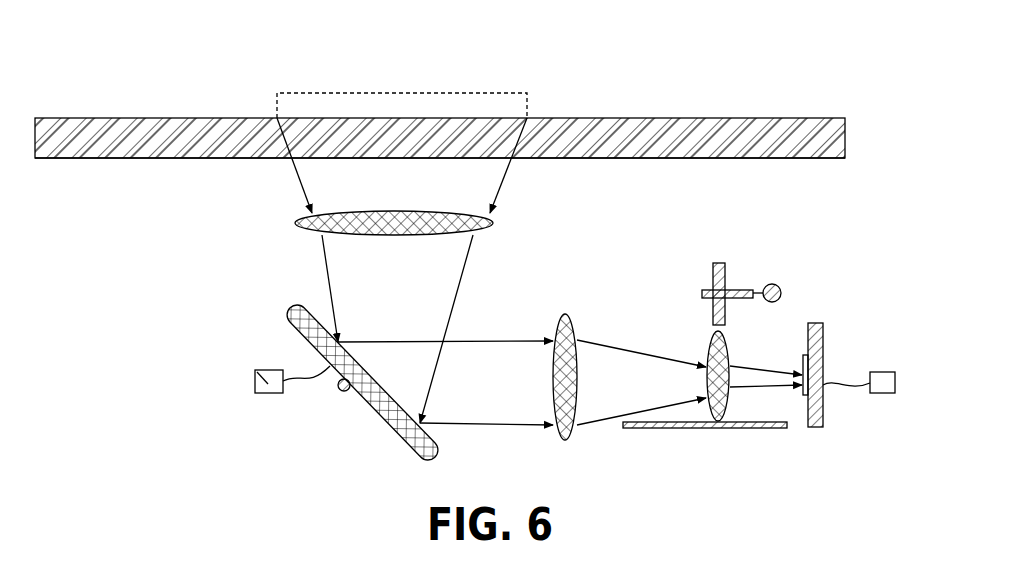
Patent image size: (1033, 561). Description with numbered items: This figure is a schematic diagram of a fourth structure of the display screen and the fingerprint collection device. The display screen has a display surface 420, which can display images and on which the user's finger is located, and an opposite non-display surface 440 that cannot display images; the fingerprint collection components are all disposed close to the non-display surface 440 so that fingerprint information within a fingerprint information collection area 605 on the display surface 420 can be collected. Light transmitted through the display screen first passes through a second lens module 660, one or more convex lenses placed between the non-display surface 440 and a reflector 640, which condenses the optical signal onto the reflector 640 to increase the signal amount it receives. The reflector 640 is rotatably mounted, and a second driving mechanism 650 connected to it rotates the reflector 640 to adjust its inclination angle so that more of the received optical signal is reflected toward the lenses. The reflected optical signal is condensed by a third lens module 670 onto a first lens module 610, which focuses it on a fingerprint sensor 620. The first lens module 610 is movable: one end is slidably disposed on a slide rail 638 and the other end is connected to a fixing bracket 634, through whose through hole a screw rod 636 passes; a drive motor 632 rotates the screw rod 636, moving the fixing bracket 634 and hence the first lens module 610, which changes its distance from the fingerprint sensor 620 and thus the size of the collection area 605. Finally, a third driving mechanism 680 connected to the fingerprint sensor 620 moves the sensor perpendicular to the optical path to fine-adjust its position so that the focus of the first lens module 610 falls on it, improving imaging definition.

The display surface 420 is at (227, 118).
The non-display surface 440 is at (222, 158).
The fingerprint information collection area 605 is at (490, 104).
The second lens module 660 is at (491, 223).
The reflector 640 is at (300, 312).
The second driving mechanism 650 is at (255, 373).
The third lens module 670 is at (566, 313).
The first lens module 610 is at (710, 356).
The fixing bracket 634 is at (713, 318).
The screw rod 636 is at (735, 292).
The drive motor 632 is at (782, 293).
The fingerprint sensor 620 is at (822, 333).
The third driving mechanism 680 is at (882, 372).
The slide rail 638 is at (750, 428).